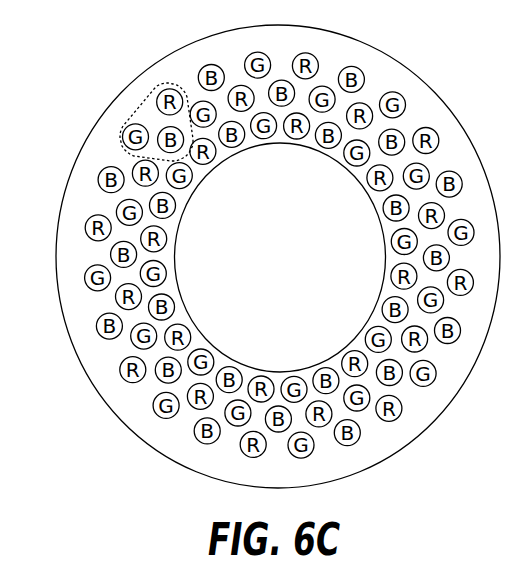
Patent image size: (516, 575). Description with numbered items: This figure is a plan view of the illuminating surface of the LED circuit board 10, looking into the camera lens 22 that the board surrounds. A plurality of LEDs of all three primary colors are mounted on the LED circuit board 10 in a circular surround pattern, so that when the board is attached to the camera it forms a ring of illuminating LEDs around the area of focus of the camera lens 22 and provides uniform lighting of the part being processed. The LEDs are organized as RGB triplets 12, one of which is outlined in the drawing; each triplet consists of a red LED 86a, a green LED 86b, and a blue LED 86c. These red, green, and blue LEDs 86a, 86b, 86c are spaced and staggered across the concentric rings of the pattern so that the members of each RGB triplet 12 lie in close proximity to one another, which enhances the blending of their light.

The LED circuit board 10 is at (66, 193).
The RGB triplet 12 is at (173, 83).
The camera lens 22 is at (291, 230).
The red LED 86a is at (160, 89).
The green LED 86b is at (140, 116).
The blue LED 86c is at (120, 133).